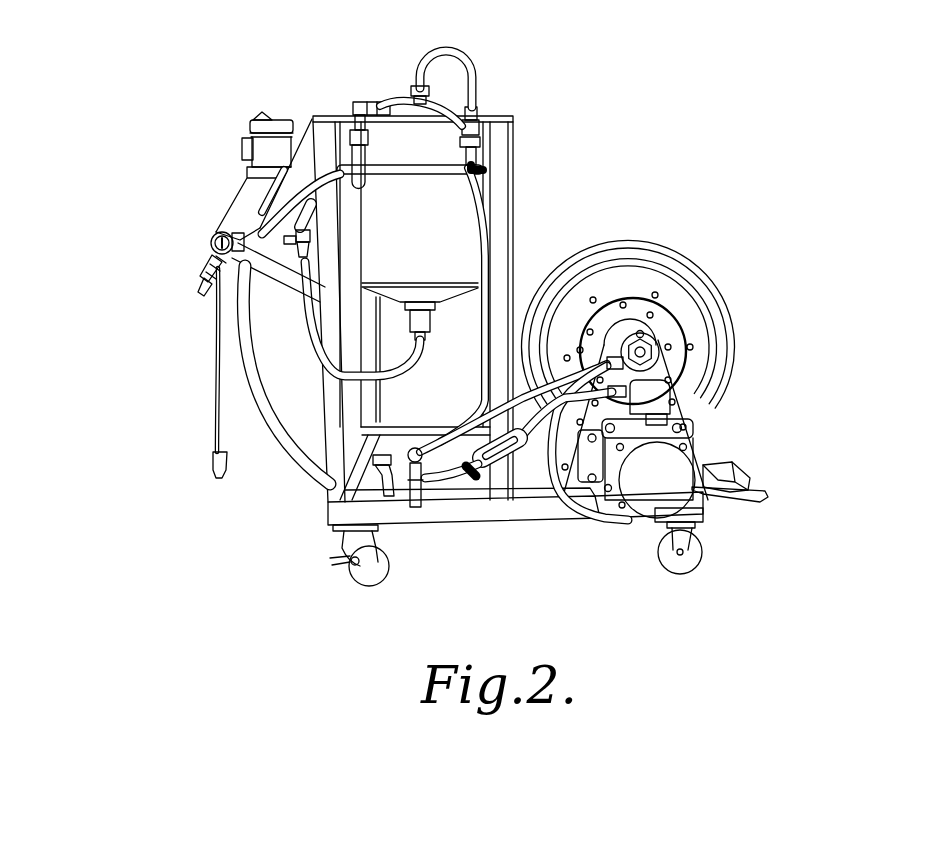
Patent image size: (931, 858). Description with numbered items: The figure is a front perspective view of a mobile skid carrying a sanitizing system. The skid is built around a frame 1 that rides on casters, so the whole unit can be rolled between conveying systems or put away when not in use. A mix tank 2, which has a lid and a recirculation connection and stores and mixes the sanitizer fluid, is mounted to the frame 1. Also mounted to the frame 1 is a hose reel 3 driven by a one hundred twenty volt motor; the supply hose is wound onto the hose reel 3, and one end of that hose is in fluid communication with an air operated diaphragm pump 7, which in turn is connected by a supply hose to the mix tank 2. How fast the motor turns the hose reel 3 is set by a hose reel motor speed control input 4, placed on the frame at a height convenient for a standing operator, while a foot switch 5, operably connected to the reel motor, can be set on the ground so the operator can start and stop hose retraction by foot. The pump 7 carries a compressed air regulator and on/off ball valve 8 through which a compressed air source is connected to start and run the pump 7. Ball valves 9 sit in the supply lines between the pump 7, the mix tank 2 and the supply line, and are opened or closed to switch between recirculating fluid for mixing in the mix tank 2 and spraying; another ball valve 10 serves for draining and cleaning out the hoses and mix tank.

The frame 1 is at (318, 493).
The mix tank 2 is at (462, 200).
The hose reel 3 is at (695, 489).
The hose reel motor speed control input 4 is at (236, 186).
The foot switch 5 is at (736, 461).
The air operated diaphragm pump 7 is at (290, 248).
The compressed air regulator and on/off ball valve 8 is at (200, 258).
The ball valves 9 is at (458, 128).
The ball valve 10 is at (427, 489).